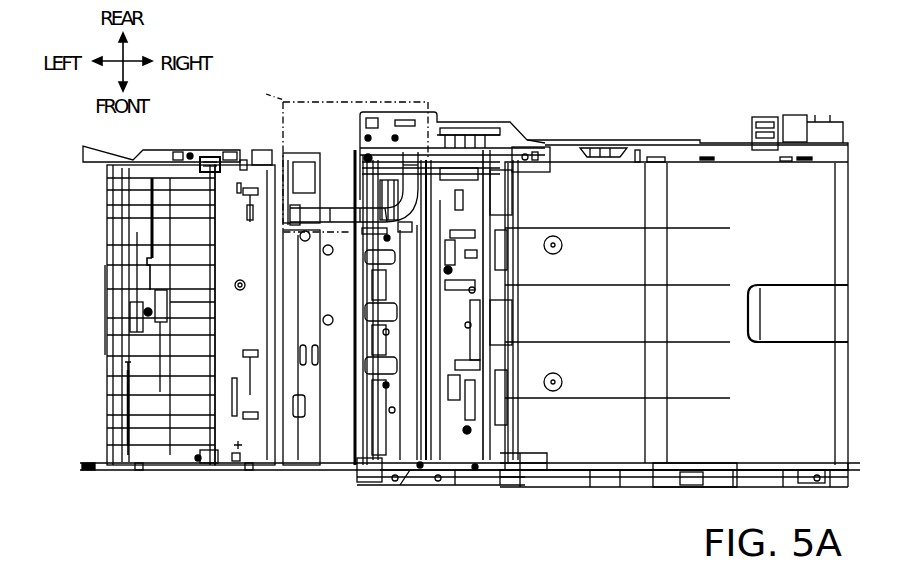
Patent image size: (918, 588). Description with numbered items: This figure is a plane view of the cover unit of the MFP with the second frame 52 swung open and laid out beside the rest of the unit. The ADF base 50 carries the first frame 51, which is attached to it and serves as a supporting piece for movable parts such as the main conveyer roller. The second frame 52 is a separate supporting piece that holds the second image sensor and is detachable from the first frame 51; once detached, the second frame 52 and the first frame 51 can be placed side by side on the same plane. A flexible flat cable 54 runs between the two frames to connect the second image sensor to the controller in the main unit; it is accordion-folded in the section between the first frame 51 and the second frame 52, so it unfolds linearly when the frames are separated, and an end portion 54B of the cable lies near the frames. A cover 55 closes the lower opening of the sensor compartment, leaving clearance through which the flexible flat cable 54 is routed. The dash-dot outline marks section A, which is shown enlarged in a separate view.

The ADF base 50 is at (572, 456).
The first frame 51 is at (447, 467).
The second frame 52 is at (268, 471).
The flexible flat cable 54 is at (342, 207).
The duct housing portion 54B is at (410, 167).
The cover 55 is at (283, 210).
The section A is at (340, 155).